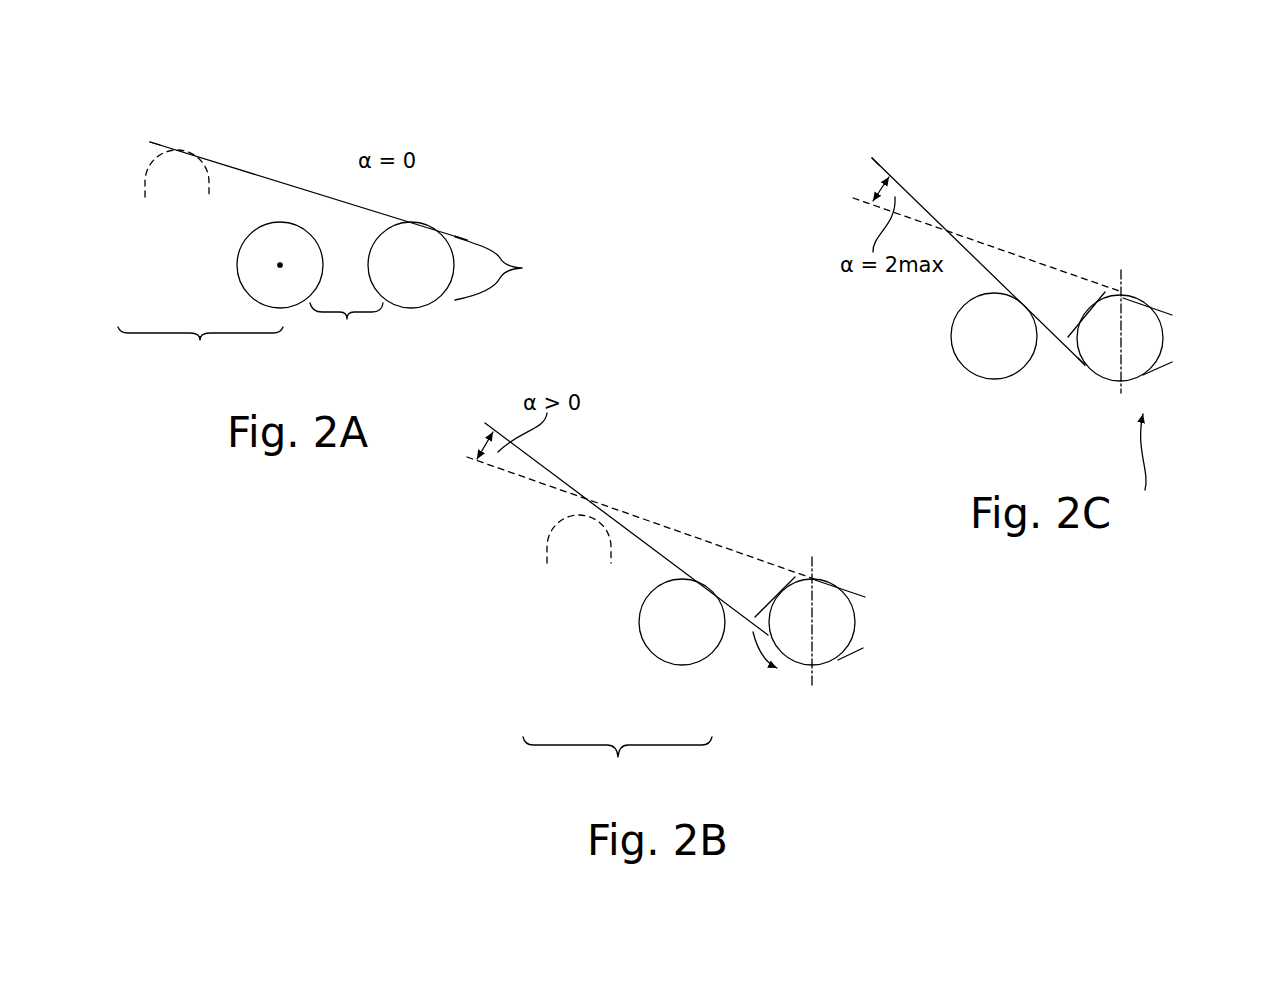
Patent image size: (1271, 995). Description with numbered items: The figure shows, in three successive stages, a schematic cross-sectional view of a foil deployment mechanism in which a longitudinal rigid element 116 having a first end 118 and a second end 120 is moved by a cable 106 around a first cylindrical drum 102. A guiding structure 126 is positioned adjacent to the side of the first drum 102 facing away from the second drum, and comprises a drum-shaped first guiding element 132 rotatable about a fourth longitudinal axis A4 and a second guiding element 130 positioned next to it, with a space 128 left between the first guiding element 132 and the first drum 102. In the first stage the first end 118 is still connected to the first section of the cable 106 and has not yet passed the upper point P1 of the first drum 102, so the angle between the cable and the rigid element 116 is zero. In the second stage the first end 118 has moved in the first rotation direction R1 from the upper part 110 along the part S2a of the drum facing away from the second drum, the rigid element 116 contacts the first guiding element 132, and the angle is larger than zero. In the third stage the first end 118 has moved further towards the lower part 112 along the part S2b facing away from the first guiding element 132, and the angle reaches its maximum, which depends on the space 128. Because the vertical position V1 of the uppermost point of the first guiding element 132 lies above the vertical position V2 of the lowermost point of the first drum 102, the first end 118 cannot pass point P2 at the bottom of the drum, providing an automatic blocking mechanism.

In FIG. 2A, the first cylindrical drum 102 is at (413, 293).
In FIG. 2B, the first cylindrical drum 102 is at (838, 630).
In FIG. 2C, the first cylindrical drum 102 is at (1148, 347).
In FIG. 2A, the cable 106 is at (510, 268).
In FIG. 2C, the cable 106 is at (1153, 308).
In FIG. 2C, the upper part of the first drum 110 is at (1120, 290).
In FIG. 2C, the lower part of the first drum 112 is at (1147, 464).
In FIG. 2A, the longitudinal rigid element 116 is at (263, 177).
In FIG. 2B, the longitudinal rigid element 116 is at (638, 538).
In FIG. 2C, the longitudinal rigid element 116 is at (927, 207).
In FIG. 2A, the first end of the longitudinal rigid element 118 is at (462, 238).
In FIG. 2C, the first end of the longitudinal rigid element 118 is at (1080, 367).
In FIG. 2A, the second end of the longitudinal rigid element 120 is at (150, 142).
In FIG. 2C, the second end of the longitudinal rigid element 120 is at (873, 158).
In FIG. 2A, the guiding structure 126 is at (200, 348).
In FIG. 2B, the guiding structure 126 is at (617, 764).
In FIG. 2A, the space 128 is at (346, 325).
In FIG. 2A, the second guiding element 130 is at (145, 178).
In FIG. 2B, the second guiding element 130 is at (550, 533).
In FIG. 2A, the first guiding element 132 is at (250, 267).
In FIG. 2B, the first guiding element 132 is at (655, 628).
In FIG. 2C, the first guiding element 132 is at (993, 357).
In FIG. 2A, the fourth longitudinal axis A4 is at (280, 265).
In FIG. 2A, the vertical position of the uppermost surface point of the first guiding element V1 is at (290, 222).
In FIG. 2A, the vertical position of the lowermost surface point of the first drum V2 is at (417, 307).
In FIG. 2B, the part of the first drum facing away from the second drum S2a is at (772, 595).
In FIG. 2C, the part of the first drum facing away from the second drum S2a is at (1075, 303).
In FIG. 2C, the part of the first drum facing away from the first guiding element S2b is at (1067, 340).
In FIG. 2B, the upper point of the first drum P1 is at (818, 582).
In FIG. 2B, the second contact point P2 is at (818, 662).
In FIG. 2B, the first rotation direction R1 is at (753, 632).